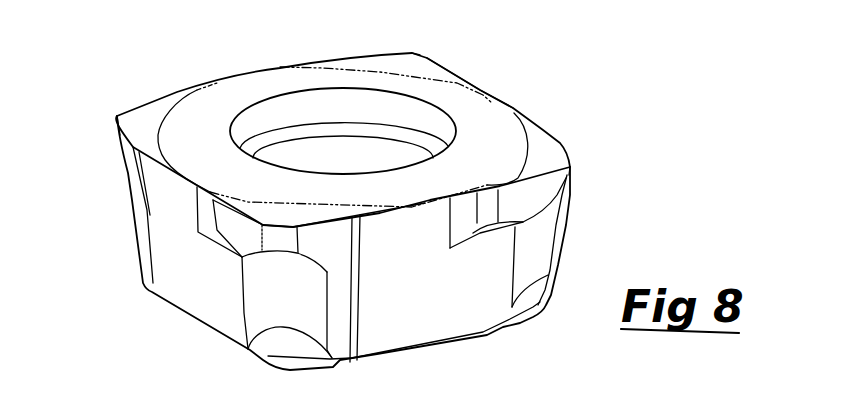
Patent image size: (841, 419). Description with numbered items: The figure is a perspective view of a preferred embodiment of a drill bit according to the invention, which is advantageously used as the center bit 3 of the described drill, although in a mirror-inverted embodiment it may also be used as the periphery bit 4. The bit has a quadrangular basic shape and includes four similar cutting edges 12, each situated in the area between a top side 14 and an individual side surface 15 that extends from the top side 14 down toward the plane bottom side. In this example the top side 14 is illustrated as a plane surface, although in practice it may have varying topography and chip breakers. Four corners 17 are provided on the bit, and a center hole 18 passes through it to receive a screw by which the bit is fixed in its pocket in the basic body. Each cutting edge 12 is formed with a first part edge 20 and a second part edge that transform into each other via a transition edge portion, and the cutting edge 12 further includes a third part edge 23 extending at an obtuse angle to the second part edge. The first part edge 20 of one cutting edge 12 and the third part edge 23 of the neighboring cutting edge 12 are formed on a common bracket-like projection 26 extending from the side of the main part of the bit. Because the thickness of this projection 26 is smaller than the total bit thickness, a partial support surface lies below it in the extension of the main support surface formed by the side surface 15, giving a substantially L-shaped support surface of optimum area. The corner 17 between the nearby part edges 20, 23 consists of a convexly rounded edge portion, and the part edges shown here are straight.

The center bit 3 is at (335, 113).
The periphery bit 4 is at (335, 113).
The cutting edge 12 is at (285, 68).
The top side 14 is at (157, 110).
The side surface 15 is at (172, 293).
The corner 17 is at (412, 45).
The center hole 18 is at (348, 145).
The first part edge 20 is at (246, 210).
The third part edge 23 is at (563, 146).
The bracket-like projection 26 is at (543, 192).